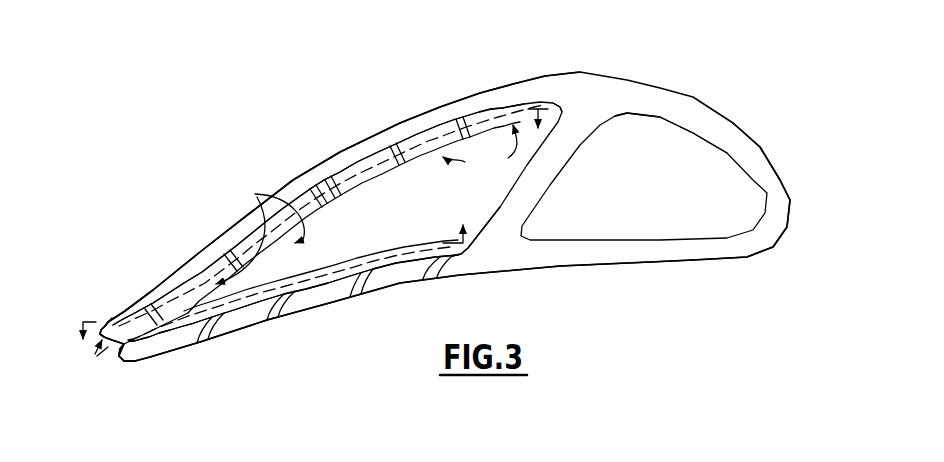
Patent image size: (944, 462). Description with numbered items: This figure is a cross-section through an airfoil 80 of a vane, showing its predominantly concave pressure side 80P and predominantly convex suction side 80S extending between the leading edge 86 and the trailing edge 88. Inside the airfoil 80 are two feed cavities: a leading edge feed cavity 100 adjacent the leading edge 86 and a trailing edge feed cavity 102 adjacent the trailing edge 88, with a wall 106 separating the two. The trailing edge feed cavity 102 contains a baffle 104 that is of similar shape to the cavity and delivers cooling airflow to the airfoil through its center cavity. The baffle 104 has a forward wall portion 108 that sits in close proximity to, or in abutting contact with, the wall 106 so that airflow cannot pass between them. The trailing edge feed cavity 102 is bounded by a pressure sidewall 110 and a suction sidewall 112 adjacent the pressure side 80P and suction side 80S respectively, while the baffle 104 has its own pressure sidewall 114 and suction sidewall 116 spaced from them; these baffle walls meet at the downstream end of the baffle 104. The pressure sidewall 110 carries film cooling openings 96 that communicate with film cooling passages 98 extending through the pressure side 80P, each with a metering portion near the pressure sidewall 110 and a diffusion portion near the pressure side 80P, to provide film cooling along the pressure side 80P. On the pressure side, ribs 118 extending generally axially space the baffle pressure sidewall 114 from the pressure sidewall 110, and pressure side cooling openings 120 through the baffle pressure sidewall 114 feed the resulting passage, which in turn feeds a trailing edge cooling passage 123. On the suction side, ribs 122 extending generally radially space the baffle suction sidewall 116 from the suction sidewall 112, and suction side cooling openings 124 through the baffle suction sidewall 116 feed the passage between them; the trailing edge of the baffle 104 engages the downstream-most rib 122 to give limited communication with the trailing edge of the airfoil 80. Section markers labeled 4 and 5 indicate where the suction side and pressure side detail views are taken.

The airfoil 80 is at (755, 83).
The suction side 80S is at (474, 92).
The pressure side 80P is at (461, 277).
The leading edge 86 is at (790, 214).
The trailing edge 88 is at (103, 322).
The film cooling openings 96 is at (250, 289).
The film cooling passages 98 is at (271, 323).
The leading edge feed cavity 100 is at (660, 111).
The trailing edge feed cavity 102 is at (537, 92).
The baffle 104 is at (192, 318).
The wall 106 is at (548, 177).
The forward wall portion 108 is at (500, 178).
The pressure sidewall 110 is at (325, 283).
The suction sidewall 112 is at (363, 173).
The pressure sidewall 114 is at (353, 257).
The suction sidewall 116 is at (338, 195).
The ribs 118 is at (118, 362).
The pressure side cooling openings 120 is at (446, 233).
The ribs 122 is at (392, 98).
The trailing edge cooling passage 123 is at (103, 369).
The suction side cooling openings 124 is at (363, 204).
The section line 4- 4 is at (309, 229).
The section line 5- 5 is at (282, 285).